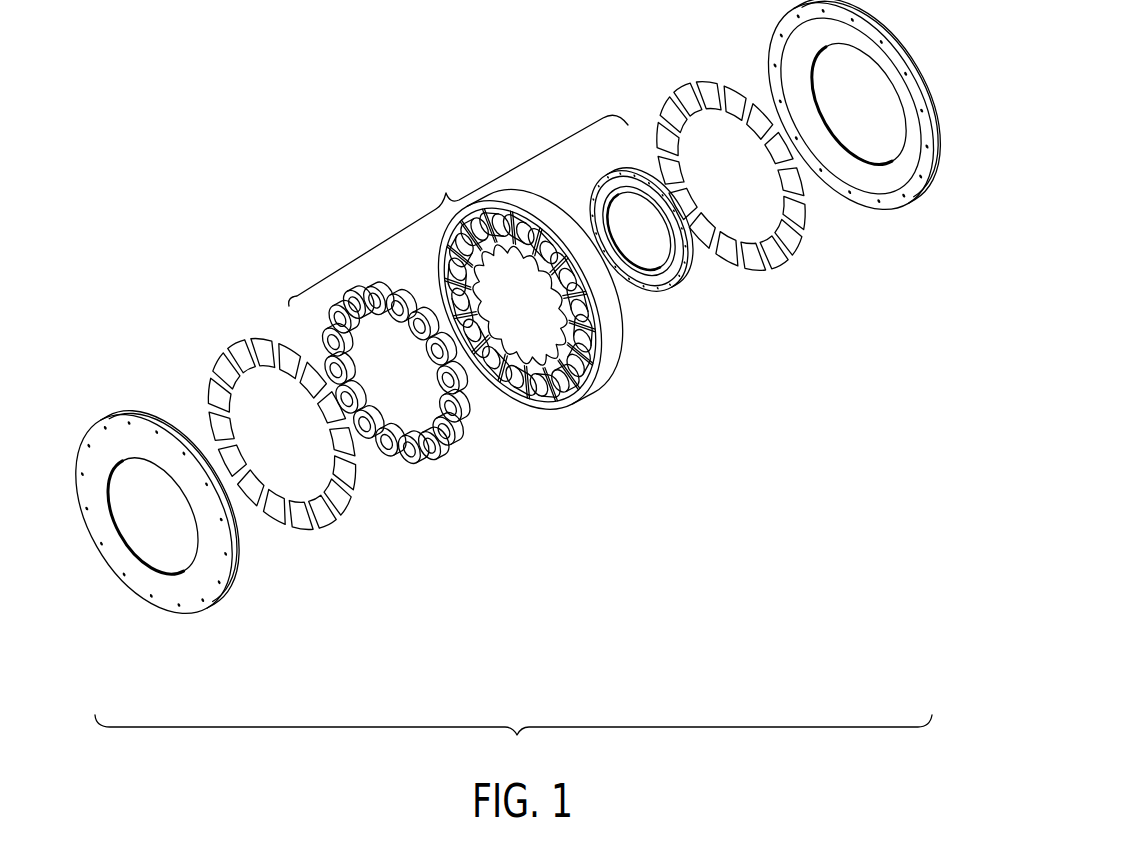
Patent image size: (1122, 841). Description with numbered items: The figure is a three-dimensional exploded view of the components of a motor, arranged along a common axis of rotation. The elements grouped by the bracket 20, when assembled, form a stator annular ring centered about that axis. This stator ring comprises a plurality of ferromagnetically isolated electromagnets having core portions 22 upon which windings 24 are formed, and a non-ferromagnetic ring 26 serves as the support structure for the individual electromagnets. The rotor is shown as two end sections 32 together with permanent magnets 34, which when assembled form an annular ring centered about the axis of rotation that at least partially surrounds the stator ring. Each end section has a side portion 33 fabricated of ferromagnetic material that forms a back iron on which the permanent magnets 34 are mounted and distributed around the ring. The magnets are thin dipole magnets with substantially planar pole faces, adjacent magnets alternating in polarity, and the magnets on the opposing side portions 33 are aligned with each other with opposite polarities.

The bracket 20 is at (446, 193).
The core portions 22 is at (568, 405).
The windings 24 is at (438, 460).
The non-ferromagnetic ring 26 is at (660, 290).
The end sections 32 is at (205, 612).
The side portions 33 is at (108, 480).
The permanent magnets 34 is at (328, 525).